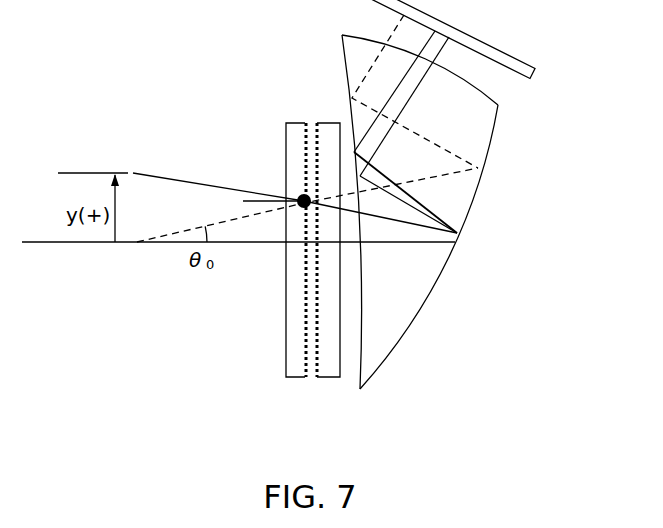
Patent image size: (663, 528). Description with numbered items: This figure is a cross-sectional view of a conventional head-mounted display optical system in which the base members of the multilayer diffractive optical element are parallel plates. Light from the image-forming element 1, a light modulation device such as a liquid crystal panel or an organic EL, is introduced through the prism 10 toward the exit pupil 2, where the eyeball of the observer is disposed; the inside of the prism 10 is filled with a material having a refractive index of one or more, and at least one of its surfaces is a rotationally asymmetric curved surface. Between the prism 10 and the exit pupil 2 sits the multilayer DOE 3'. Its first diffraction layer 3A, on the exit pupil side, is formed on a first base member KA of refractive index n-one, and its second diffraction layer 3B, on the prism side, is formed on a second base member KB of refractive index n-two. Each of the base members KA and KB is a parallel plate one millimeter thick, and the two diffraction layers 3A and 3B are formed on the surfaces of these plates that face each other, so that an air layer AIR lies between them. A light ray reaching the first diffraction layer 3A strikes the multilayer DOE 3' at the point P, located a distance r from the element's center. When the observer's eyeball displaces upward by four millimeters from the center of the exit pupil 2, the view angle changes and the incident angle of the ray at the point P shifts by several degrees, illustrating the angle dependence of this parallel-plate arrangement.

The image-forming element 1 is at (495, 46).
The exit pupil 2 is at (131, 161).
The multilayer DOE 3' is at (288, 218).
The first diffraction layer 3A is at (263, 250).
The second diffraction layer 3B is at (314, 245).
The prism 10 is at (458, 192).
The point P is at (299, 187).
The first base member KA is at (291, 375).
The second base member KB is at (333, 375).
The air layer AIR is at (313, 379).